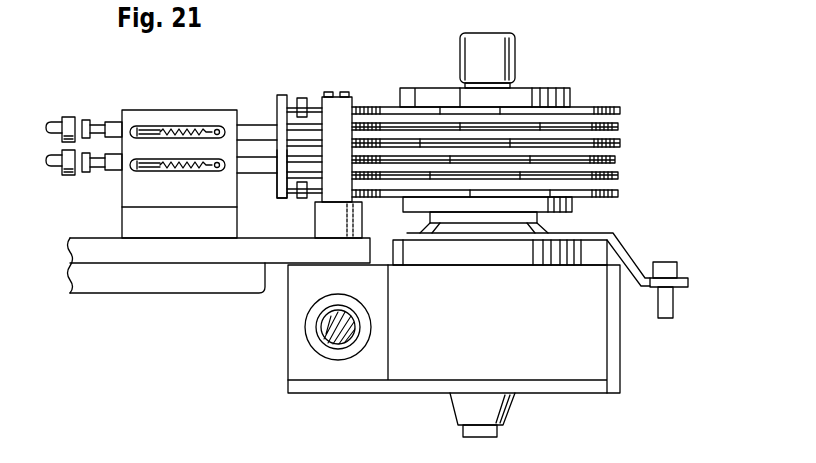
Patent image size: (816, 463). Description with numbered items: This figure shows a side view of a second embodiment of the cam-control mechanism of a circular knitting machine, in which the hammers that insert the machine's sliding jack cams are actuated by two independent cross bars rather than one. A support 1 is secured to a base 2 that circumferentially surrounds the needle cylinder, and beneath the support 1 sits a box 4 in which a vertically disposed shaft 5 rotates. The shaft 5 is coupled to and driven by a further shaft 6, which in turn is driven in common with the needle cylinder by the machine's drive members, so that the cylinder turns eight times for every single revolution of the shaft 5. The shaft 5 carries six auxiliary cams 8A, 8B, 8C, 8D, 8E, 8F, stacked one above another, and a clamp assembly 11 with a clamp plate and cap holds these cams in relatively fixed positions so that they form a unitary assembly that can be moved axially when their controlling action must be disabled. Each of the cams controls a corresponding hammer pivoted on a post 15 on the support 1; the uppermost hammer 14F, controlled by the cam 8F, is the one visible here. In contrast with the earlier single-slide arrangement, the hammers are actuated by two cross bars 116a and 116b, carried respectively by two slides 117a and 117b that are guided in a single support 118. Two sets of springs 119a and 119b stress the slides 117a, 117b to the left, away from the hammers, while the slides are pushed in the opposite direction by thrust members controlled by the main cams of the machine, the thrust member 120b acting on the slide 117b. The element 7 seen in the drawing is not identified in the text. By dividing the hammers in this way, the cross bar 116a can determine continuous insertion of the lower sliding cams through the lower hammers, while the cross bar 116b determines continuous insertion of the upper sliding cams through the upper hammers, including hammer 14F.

The support 1 is at (213, 263).
The base 2 is at (93, 293).
The box 4 is at (287, 356).
The shaft 5 is at (462, 432).
The shaft 6 is at (337, 355).
The clamping block 7 is at (553, 88).
The auxiliary cam 8A is at (618, 194).
The auxiliary cam 8B is at (618, 175).
The auxiliary cam 8C is at (615, 160).
The auxiliary cam 8D is at (620, 145).
The auxiliary cam 8E is at (618, 127).
The auxiliary cam 8F is at (620, 110).
The clamp assembly 11 is at (421, 88).
The hammer 14F is at (341, 98).
The post 15 is at (340, 92).
The cross bar 116a is at (287, 198).
The cross bar 116b is at (285, 95).
The slide 117a is at (250, 175).
The slide 117b is at (257, 122).
The support 118 is at (192, 110).
The springs 119a is at (160, 168).
The springs 119b is at (164, 128).
The thrust member 120b is at (50, 122).